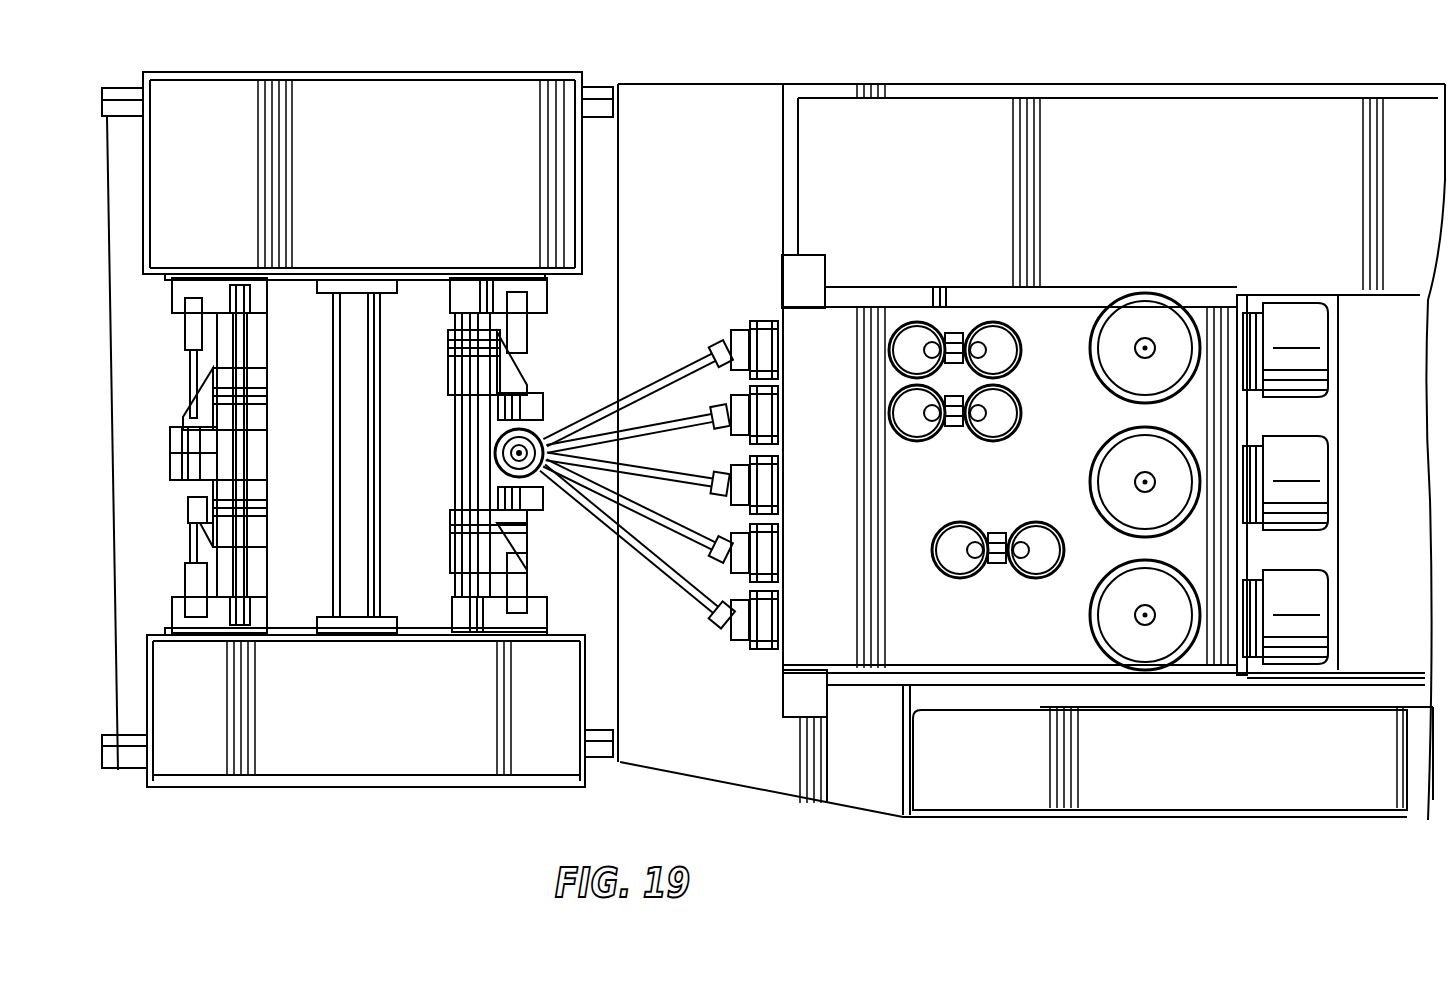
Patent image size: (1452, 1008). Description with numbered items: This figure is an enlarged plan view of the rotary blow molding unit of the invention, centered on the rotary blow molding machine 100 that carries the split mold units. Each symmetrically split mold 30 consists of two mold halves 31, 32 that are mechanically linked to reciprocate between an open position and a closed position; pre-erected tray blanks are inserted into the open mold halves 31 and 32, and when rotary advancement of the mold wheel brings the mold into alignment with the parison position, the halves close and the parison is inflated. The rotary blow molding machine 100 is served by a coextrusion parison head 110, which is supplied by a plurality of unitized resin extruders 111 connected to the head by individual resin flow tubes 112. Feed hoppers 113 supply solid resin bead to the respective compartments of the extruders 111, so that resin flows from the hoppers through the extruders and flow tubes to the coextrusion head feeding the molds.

The split mold 30 is at (148, 460).
The mold half 31 is at (168, 438).
The mold half 32 is at (168, 470).
The rotary blow molding machine 100 is at (374, 721).
The coextrusion parison head 110 is at (497, 450).
The unitized resin extruder 111 is at (838, 507).
The resin flow tube 112 is at (697, 527).
The feed hopper 113 is at (985, 428).